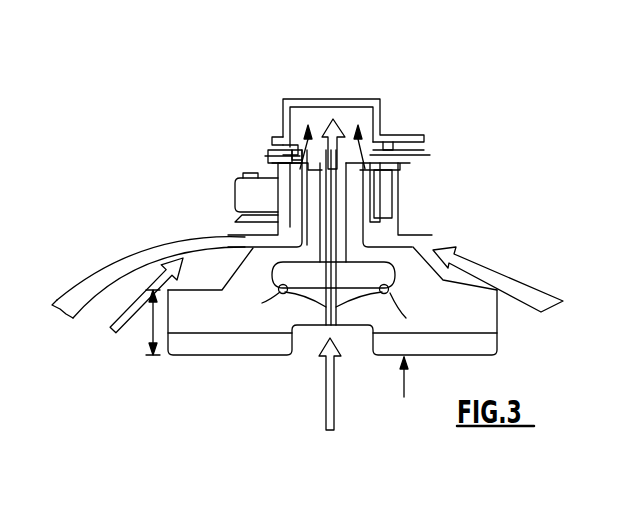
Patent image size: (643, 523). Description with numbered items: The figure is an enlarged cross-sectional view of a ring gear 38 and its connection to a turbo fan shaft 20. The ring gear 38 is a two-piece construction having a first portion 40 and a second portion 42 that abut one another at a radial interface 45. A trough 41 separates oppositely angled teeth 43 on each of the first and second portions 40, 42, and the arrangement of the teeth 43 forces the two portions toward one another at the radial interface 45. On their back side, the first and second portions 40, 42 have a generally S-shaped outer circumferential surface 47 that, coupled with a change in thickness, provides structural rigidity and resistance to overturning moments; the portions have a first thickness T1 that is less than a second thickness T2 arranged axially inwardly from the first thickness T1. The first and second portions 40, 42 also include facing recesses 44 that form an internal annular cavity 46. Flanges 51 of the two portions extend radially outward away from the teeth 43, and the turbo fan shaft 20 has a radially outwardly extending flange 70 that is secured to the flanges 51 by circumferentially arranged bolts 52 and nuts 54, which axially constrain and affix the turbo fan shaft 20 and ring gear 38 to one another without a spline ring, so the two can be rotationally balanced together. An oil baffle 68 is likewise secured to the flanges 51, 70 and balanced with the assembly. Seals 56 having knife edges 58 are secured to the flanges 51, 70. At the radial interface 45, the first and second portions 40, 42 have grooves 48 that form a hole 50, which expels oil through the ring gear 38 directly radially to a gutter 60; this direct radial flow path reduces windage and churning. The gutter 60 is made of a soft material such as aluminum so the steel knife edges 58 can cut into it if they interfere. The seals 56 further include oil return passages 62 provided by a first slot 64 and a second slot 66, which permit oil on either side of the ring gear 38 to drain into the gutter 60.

The turbo fan shaft 20 is at (130, 258).
The ring gear 38 is at (296, 380).
The first portion 40 is at (210, 320).
The trough 41 is at (356, 350).
The second portion 42 is at (481, 326).
The teeth 43 is at (230, 348).
The facing recesses 44 is at (276, 290).
The radial interface 45 is at (345, 308).
The internal annular cavity 46 is at (352, 291).
The S-shaped outer circumferential surface 47 is at (218, 262).
The grooves 48 is at (320, 252).
The hole 50 is at (350, 204).
The flanges 51 is at (308, 168).
The bolts 52 is at (242, 196).
The nuts 54 is at (280, 167).
The seals 56 is at (296, 140).
The knife edges 58 is at (395, 145).
The gutter 60 is at (382, 105).
The oil return passages 62 is at (320, 137).
The first slot 64 is at (308, 125).
The second slot 66 is at (358, 125).
The oil baffle 68 is at (523, 277).
The flange 70 is at (255, 213).
The first thickness T1 is at (153, 358).
The second thickness T2 is at (406, 391).